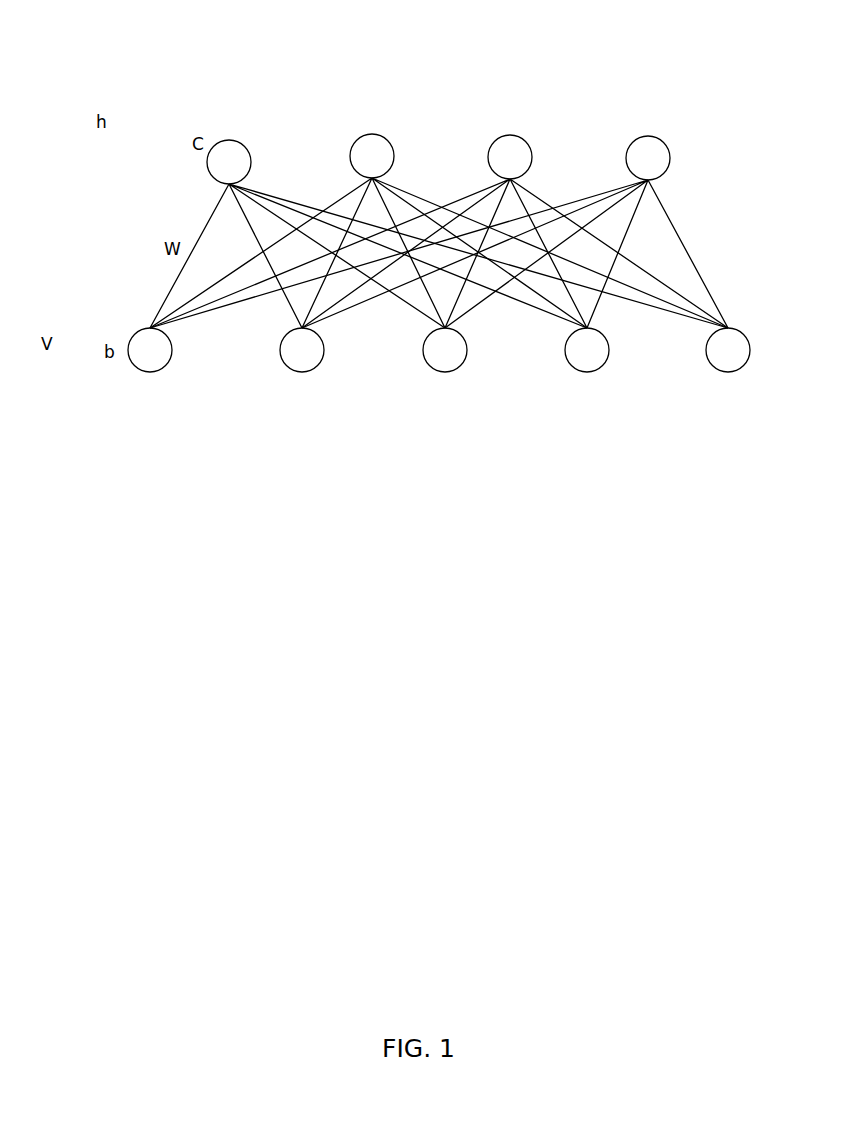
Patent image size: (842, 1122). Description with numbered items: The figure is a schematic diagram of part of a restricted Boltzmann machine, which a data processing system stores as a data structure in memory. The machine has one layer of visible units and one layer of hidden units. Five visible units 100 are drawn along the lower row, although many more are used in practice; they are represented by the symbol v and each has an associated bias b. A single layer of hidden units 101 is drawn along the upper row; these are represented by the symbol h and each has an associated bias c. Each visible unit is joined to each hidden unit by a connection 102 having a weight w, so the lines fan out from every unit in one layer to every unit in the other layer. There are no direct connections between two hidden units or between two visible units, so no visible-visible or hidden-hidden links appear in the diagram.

The visible units 100 is at (442, 372).
The hidden units 101 is at (645, 137).
The connection 102 is at (307, 298).